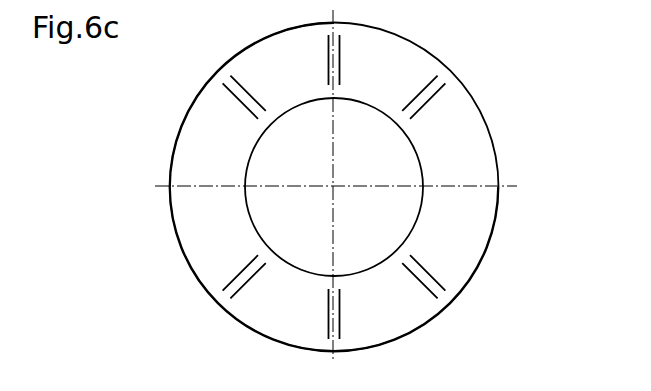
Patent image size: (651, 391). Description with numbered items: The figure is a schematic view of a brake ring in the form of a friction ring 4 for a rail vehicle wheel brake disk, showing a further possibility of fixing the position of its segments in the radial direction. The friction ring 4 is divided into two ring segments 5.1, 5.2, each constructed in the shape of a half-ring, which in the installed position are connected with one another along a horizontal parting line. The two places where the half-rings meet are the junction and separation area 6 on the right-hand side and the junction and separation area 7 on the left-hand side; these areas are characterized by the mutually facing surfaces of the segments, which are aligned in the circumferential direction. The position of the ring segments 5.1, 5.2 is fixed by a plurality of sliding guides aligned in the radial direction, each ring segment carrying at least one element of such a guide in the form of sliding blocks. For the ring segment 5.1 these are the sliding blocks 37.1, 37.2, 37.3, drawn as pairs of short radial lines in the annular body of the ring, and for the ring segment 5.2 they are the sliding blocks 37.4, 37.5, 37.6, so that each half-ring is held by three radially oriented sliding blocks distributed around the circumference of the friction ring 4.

The friction ring 4 is at (488, 123).
The junction and separation area 6 is at (527, 185).
The ring segment 5.1 is at (465, 247).
The ring segment 5.2 is at (212, 142).
The junction and separation area 7 is at (190, 188).
The sliding block 37.1 is at (432, 283).
The sliding block 37.2 is at (339, 320).
The sliding block 37.3 is at (237, 282).
The sliding block 37.4 is at (232, 85).
The sliding block 37.5 is at (327, 62).
The sliding block 37.6 is at (433, 87).